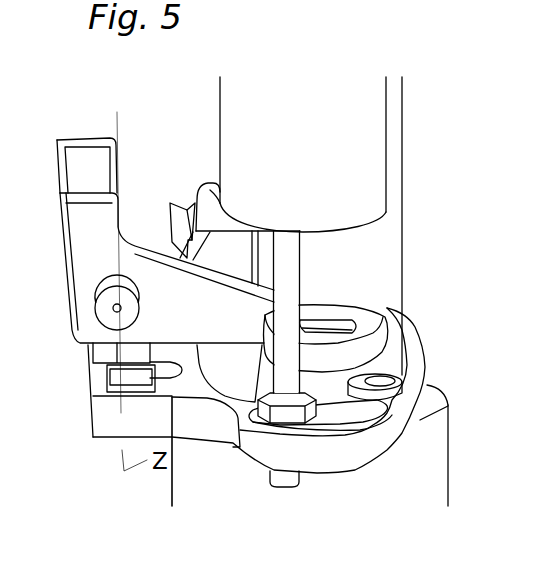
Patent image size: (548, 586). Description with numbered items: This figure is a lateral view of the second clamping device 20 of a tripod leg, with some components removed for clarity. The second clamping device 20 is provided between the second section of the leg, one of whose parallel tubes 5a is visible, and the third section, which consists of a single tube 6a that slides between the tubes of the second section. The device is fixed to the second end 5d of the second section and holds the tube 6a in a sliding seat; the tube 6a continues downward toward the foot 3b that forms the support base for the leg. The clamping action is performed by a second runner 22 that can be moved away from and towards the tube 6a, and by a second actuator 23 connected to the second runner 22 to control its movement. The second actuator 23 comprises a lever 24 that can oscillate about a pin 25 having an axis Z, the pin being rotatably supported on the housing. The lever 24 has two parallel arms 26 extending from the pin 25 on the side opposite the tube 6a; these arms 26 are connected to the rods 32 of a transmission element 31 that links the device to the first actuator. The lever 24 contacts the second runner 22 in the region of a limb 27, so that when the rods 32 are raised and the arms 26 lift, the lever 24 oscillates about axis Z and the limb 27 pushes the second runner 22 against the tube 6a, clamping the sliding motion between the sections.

The foot 3b is at (453, 456).
The tube 5a is at (366, 146).
The second end 5d is at (380, 199).
The tube 6a is at (390, 255).
The second clamping device 20 is at (70, 336).
The second runner 22 is at (209, 182).
The second actuator 23 is at (161, 324).
The lever 24 is at (91, 133).
The pin 25 is at (103, 303).
The parallel arms 26 is at (232, 318).
The limb 27 is at (173, 200).
The transmission element 31 is at (304, 251).
The rods 32 is at (292, 288).